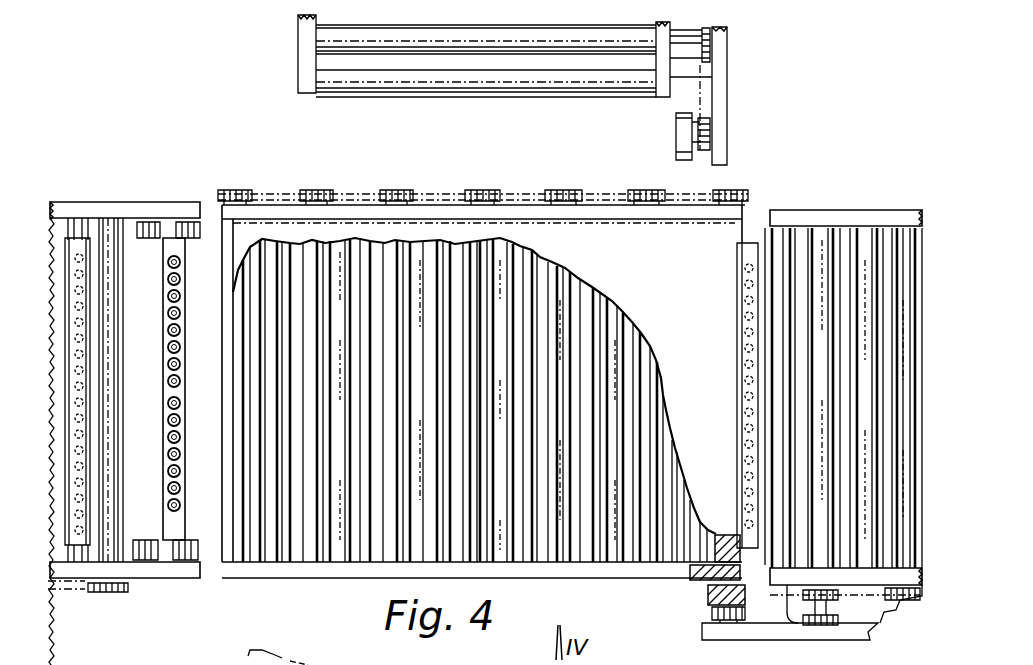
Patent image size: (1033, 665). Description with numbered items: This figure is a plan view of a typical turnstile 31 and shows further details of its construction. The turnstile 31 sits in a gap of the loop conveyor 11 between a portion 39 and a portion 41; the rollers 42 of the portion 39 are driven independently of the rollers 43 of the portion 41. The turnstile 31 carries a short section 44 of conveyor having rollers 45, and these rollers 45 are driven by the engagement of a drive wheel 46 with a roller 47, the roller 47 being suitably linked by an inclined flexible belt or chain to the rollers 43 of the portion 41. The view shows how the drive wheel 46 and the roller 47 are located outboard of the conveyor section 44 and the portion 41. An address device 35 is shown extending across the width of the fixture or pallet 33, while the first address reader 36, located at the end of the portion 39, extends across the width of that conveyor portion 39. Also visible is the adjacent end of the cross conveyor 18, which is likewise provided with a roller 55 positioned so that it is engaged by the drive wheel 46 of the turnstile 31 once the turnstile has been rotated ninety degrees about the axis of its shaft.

The loop conveyor 11 is at (122, 205).
The cross conveyor 18 is at (300, 55).
The turnstile 31 is at (296, 578).
The fixture or pallet 33 is at (353, 232).
The address device 35 is at (84, 300).
The first address reader 36 is at (165, 392).
The portion of the loop conveyor 39 is at (180, 575).
The portion of the loop conveyor 41 is at (807, 212).
The rollers 42 is at (104, 226).
The rollers 43 is at (905, 226).
The short section of conveyor 44 is at (604, 575).
The rollers 45 is at (515, 560).
The drive wheel 46 is at (706, 598).
The roller 47 is at (733, 622).
The roller 55 is at (675, 126).